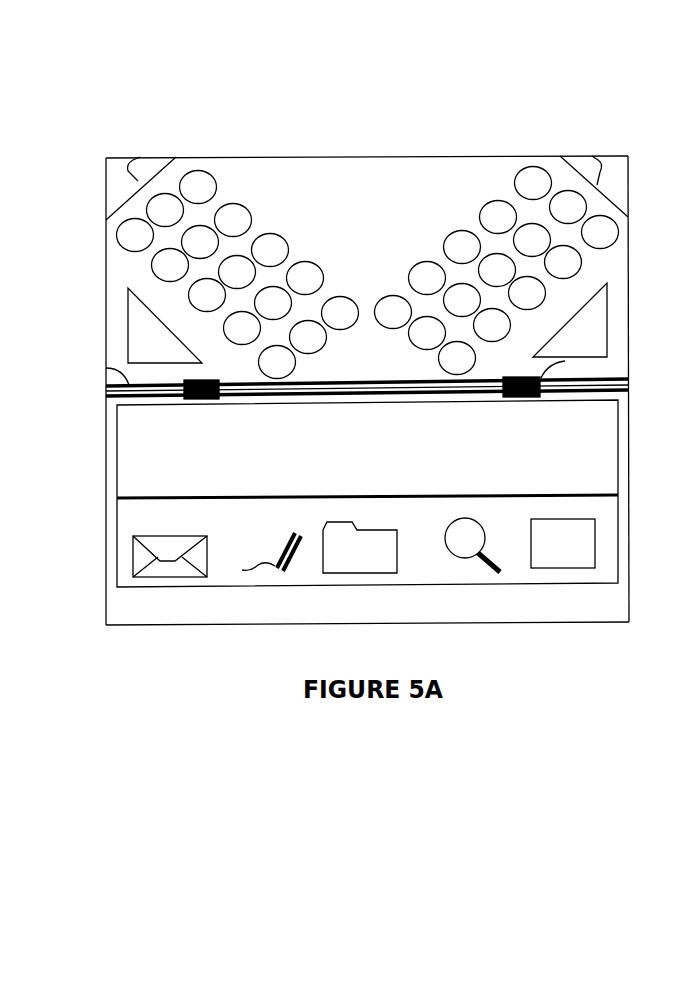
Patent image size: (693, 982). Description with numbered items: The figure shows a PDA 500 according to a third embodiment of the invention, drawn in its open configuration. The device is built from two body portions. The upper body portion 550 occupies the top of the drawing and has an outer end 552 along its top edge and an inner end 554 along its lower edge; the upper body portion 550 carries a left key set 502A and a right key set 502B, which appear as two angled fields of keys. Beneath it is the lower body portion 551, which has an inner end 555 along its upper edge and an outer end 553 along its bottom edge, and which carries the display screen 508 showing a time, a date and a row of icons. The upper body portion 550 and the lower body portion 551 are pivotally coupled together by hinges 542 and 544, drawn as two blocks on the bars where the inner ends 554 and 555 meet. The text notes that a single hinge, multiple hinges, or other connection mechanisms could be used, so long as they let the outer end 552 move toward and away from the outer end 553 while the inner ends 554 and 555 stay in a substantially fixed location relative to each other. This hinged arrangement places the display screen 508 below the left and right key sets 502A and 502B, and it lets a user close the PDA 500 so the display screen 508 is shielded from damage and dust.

The PDA 500 is at (418, 97).
The left key set 502A is at (137, 157).
The right key set 502B is at (611, 156).
The display screen 508 is at (602, 566).
The hinge 542 is at (203, 400).
The hinge 544 is at (565, 361).
The upper body portion 550 is at (385, 207).
The lower body portion 551 is at (168, 614).
The outer end 552 is at (270, 157).
The outer end 553 is at (233, 625).
The inner end 554 is at (128, 384).
The inner end 555 is at (117, 397).